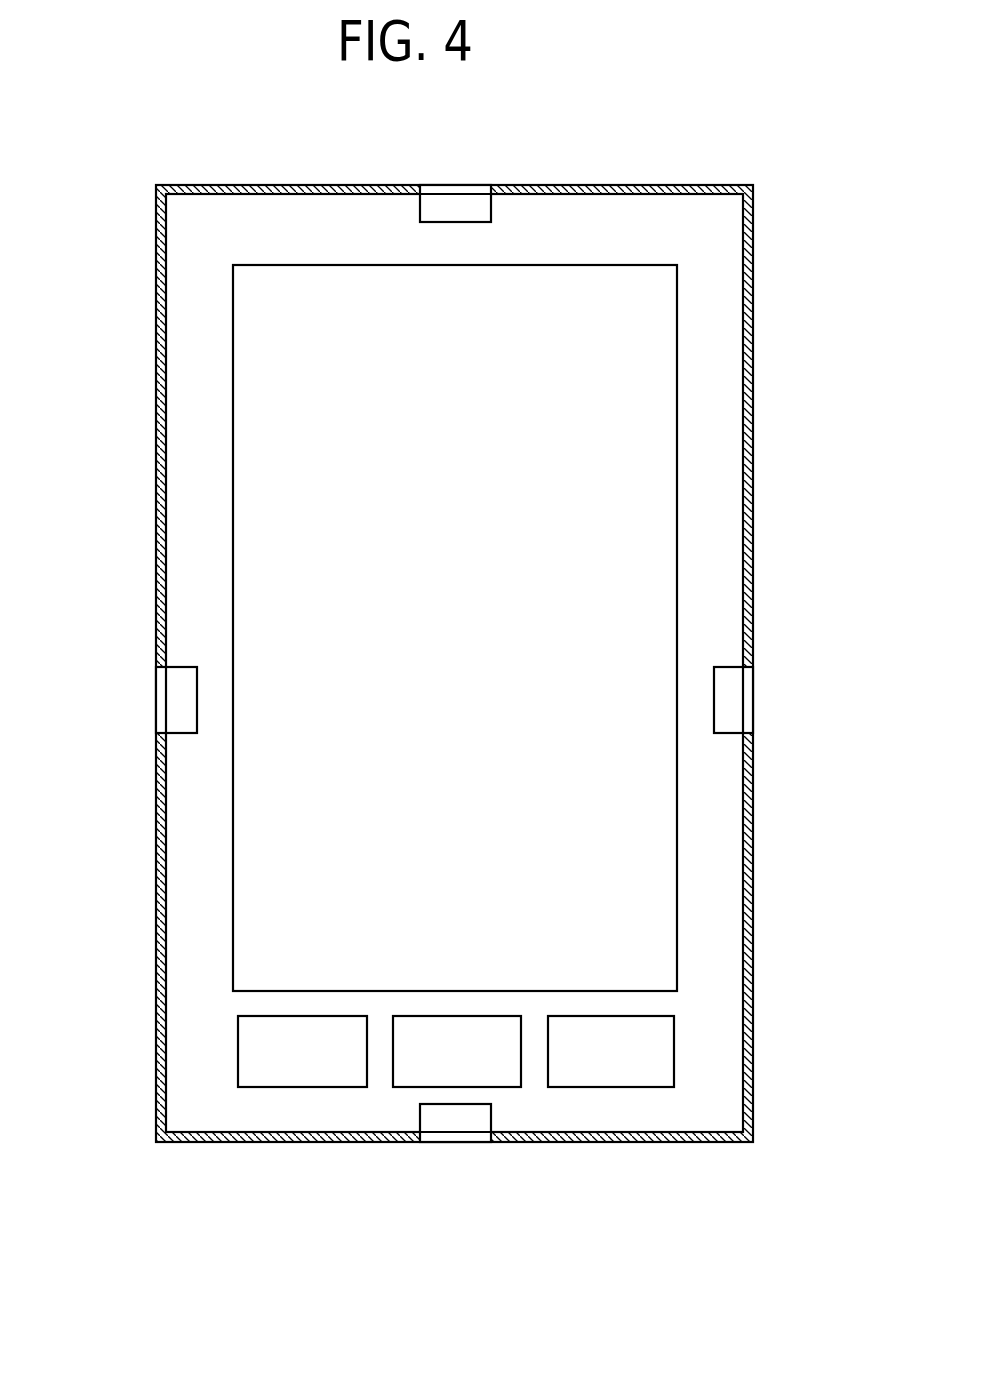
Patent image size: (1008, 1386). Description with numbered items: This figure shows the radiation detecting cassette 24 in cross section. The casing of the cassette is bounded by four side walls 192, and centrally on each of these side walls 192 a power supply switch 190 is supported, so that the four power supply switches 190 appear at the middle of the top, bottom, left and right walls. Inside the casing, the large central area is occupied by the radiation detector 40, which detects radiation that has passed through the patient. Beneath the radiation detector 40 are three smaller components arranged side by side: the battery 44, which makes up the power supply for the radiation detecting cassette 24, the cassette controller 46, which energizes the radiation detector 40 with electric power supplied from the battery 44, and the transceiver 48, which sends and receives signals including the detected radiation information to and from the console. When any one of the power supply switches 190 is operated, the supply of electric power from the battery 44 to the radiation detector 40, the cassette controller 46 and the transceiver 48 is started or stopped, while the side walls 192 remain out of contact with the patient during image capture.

The radiation detecting cassette 24 is at (140, 569).
The radiation detector 40 is at (648, 582).
The battery 44 is at (295, 1030).
The cassette controller 46 is at (449, 1030).
The transceiver 48 is at (602, 1030).
The power supply switch 190 is at (458, 185).
The side wall 192 is at (316, 185).